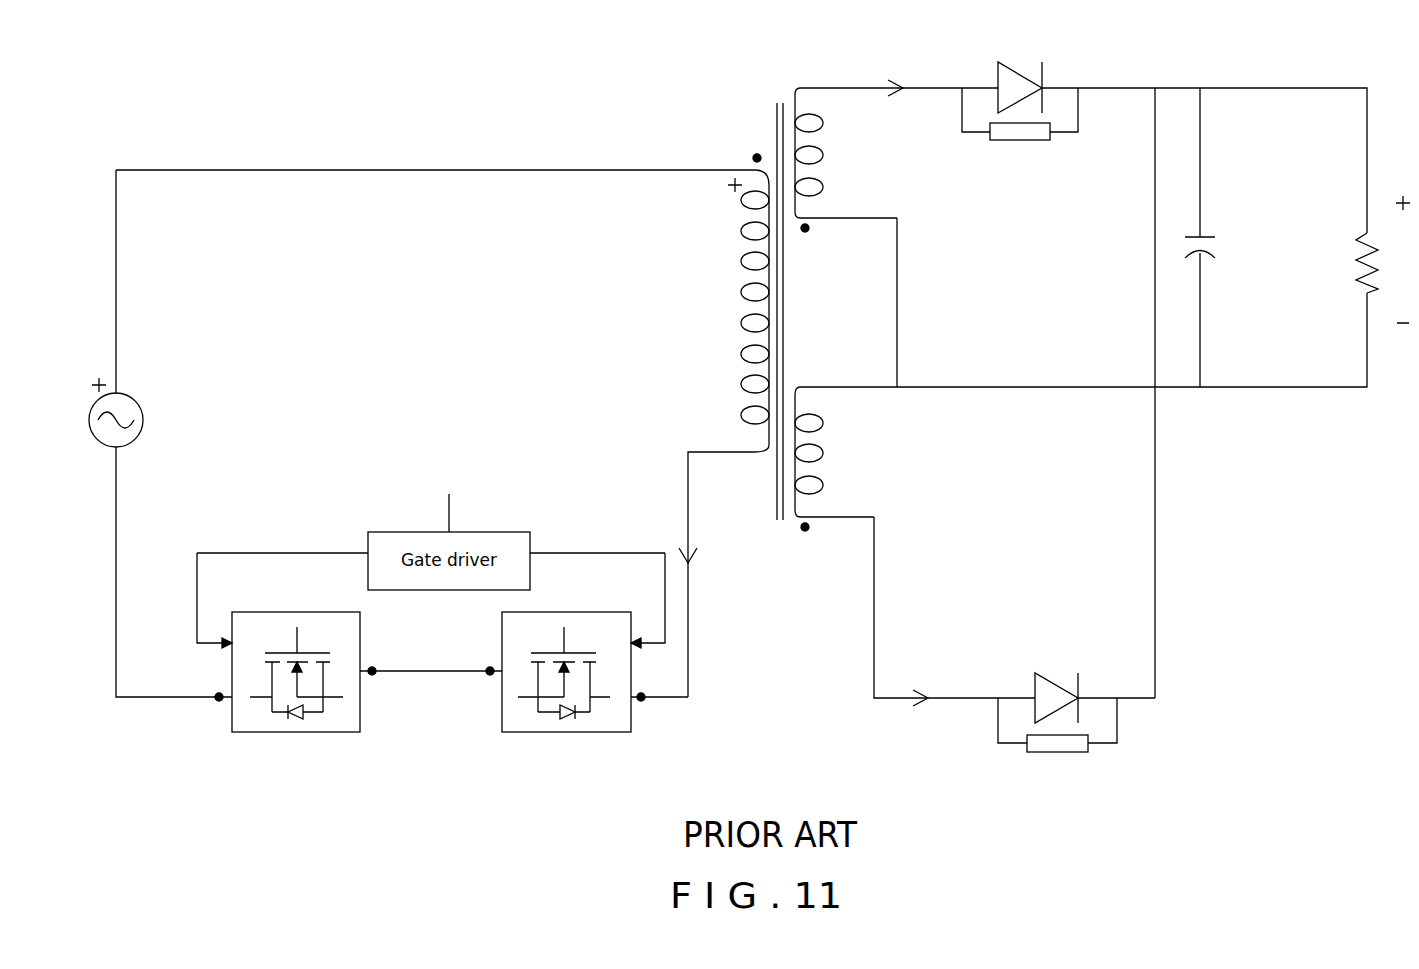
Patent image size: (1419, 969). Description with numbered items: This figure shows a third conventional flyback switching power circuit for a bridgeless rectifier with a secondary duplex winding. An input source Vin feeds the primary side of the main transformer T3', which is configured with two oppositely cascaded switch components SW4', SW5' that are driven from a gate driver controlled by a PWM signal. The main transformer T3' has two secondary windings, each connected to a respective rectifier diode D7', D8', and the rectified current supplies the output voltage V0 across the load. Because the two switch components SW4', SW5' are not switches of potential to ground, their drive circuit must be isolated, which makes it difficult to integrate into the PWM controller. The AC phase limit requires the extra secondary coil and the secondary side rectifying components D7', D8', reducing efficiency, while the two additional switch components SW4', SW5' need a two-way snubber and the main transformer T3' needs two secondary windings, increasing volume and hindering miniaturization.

The main transformer T3' is at (812, 293).
The rectifier diode D7' is at (1020, 88).
The rectifier diode D8' is at (1057, 697).
The switch component SW4' is at (296, 660).
The switch component SW5' is at (566, 660).
The input voltage source Vin is at (131, 412).
The output voltage across load resistor V0 is at (1385, 259).
The PWM controller PWM is at (448, 504).